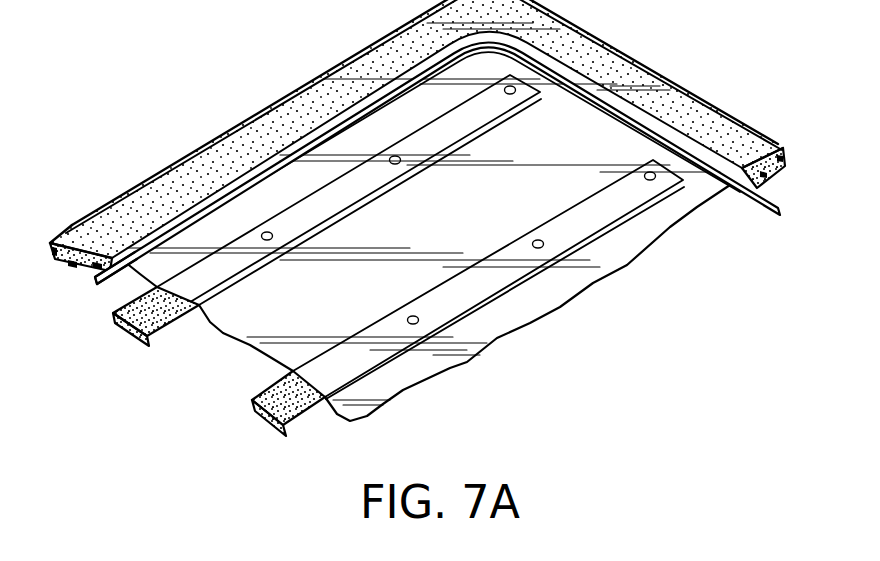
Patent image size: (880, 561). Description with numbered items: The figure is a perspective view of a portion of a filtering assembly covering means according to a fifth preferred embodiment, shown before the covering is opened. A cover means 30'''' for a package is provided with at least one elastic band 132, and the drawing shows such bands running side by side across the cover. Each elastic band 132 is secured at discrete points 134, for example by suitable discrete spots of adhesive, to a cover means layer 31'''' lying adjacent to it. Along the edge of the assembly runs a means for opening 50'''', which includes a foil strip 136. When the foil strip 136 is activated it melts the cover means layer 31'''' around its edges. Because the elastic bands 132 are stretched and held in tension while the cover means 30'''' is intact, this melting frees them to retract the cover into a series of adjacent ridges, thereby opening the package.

The means for opening 50'''' is at (437, 153).
The foil strip 136 is at (95, 279).
The cover means layer 31'''' is at (209, 328).
The cover means 30'''' is at (432, 236).
The discrete points 134 is at (418, 324).
The elastic band 132 is at (293, 426).